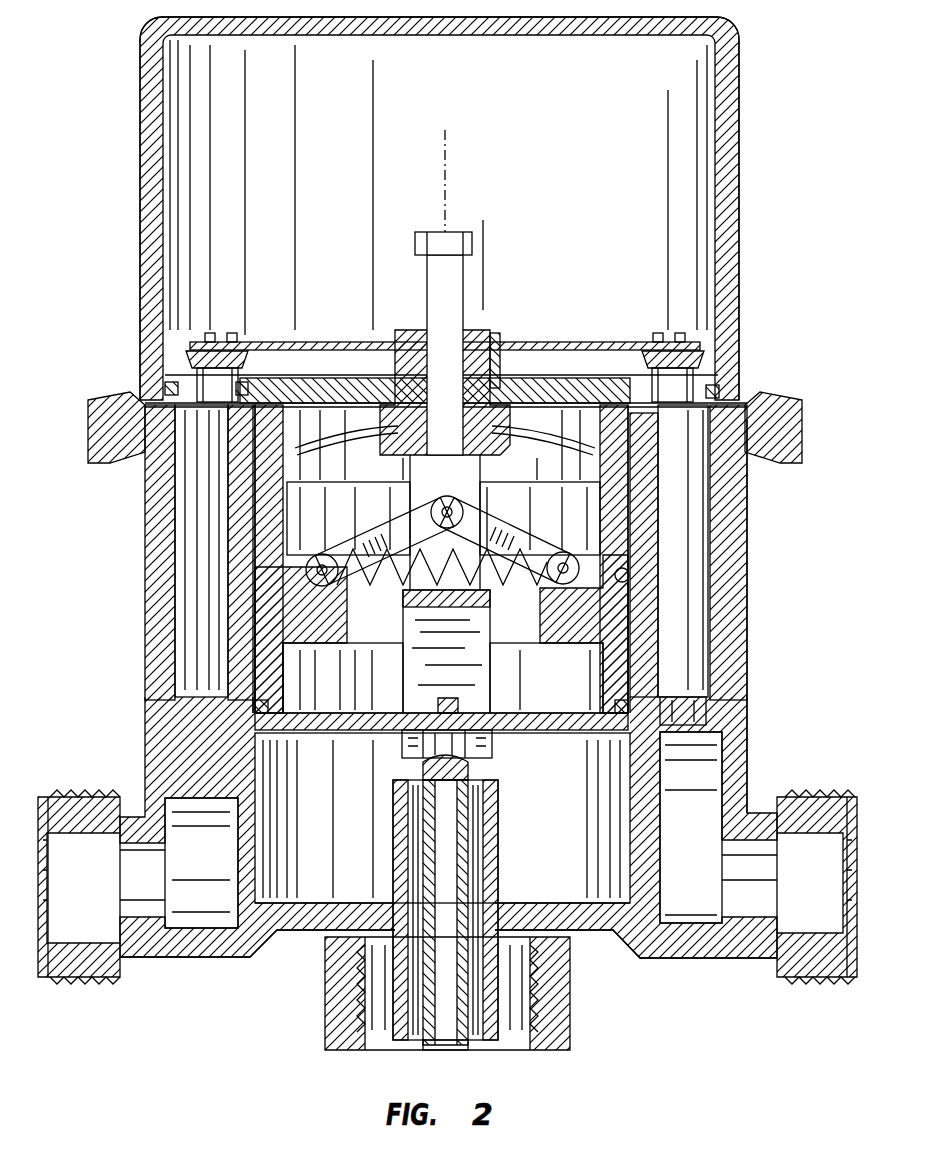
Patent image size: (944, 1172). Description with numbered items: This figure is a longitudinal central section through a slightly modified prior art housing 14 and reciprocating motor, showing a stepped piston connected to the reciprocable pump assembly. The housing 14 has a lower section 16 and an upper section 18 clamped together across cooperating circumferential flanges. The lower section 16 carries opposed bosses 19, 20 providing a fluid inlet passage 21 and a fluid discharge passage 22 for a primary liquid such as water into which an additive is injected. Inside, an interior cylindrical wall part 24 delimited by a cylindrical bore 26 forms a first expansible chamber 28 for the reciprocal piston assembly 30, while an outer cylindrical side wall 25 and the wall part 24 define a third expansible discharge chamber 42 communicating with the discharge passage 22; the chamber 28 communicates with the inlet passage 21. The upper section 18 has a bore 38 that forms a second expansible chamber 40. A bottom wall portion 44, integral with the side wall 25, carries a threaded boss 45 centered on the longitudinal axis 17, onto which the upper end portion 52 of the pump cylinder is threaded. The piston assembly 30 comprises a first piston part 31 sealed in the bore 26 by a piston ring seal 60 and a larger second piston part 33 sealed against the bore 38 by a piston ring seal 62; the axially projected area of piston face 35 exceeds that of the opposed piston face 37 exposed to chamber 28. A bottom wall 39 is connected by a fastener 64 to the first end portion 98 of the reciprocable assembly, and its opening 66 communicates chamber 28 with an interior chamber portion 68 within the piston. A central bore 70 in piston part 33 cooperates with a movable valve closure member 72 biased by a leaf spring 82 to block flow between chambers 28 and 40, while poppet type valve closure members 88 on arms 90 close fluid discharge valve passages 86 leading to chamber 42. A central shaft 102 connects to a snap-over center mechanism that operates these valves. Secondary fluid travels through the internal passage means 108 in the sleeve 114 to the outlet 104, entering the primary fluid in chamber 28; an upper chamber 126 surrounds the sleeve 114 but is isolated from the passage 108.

The housing 14 is at (746, 244).
The lower housing section 16 is at (746, 525).
The longitudinal axis 17 is at (445, 180).
The upper housing section 18 is at (742, 178).
The inlet boss 19 is at (127, 820).
The discharge boss 20 is at (784, 808).
The fluid inlet passage 21 is at (83, 919).
The fluid discharge passage 22 is at (827, 919).
The interior cylindrical wall part 24 is at (660, 548).
The outer cylindrical side wall 25 is at (735, 640).
The cylindrical bore 26 is at (628, 578).
The first expansible chamber 28 is at (585, 821).
The reciprocal piston assembly 30 is at (637, 501).
The first piston part 31 is at (337, 617).
The second piston part 33 is at (262, 385).
The piston face 35 is at (372, 378).
The piston face 37 is at (305, 742).
The bore 38 is at (165, 128).
The bottom wall 39 is at (562, 716).
The second expansible chamber 40 is at (427, 96).
The third expansible fluid discharge chamber 42 is at (689, 462).
The bottom wall portion 44 is at (212, 960).
The threaded boss 45 is at (328, 945).
The upper end portion 52 is at (560, 1013).
The piston ring seal 60 is at (253, 706).
The piston ring seal 62 is at (165, 387).
The fastener 64 is at (447, 700).
The opening 66 is at (350, 715).
The interior chamber portion 68 is at (385, 511).
The central bore 70 is at (422, 335).
The movable valve closure member 72 is at (490, 355).
The leaf spring 82 is at (330, 448).
The fluid discharge valve passages 86 is at (715, 385).
The poppet type valve closure members 88 is at (190, 340).
The arms 90 is at (566, 342).
The first end portion 98 is at (500, 987).
The central shaft 102 is at (465, 283).
The outlet 104 is at (490, 792).
The internal passage means 108 is at (452, 855).
The sleeve 114 is at (478, 895).
The upper chamber 126 is at (383, 1032).